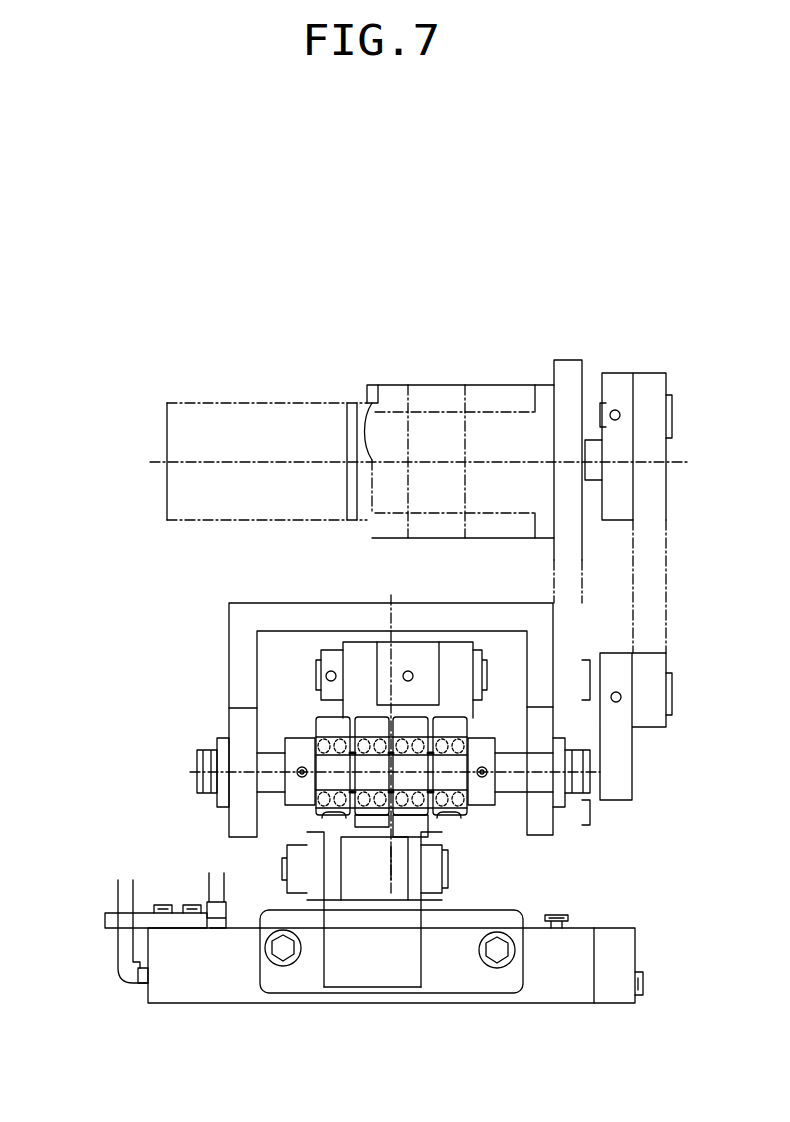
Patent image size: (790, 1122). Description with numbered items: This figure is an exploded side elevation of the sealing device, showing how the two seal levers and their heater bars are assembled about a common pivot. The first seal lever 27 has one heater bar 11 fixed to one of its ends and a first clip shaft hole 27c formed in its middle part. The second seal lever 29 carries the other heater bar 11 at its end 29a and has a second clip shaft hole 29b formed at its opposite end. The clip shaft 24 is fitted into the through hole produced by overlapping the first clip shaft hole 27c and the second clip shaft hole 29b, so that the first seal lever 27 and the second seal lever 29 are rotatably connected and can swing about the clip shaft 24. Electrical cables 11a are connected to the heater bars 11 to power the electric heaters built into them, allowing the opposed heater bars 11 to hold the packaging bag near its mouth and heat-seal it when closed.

The heater bar 11 is at (208, 965).
The electrical cable 11a is at (212, 886).
The clip shaft 24 is at (272, 765).
The first seal lever 27 is at (405, 665).
The first clip shaft hole 27c is at (322, 725).
The second seal lever 29 is at (387, 940).
The end of second seal lever 29a is at (442, 958).
The second clip shaft hole 29b is at (302, 810).